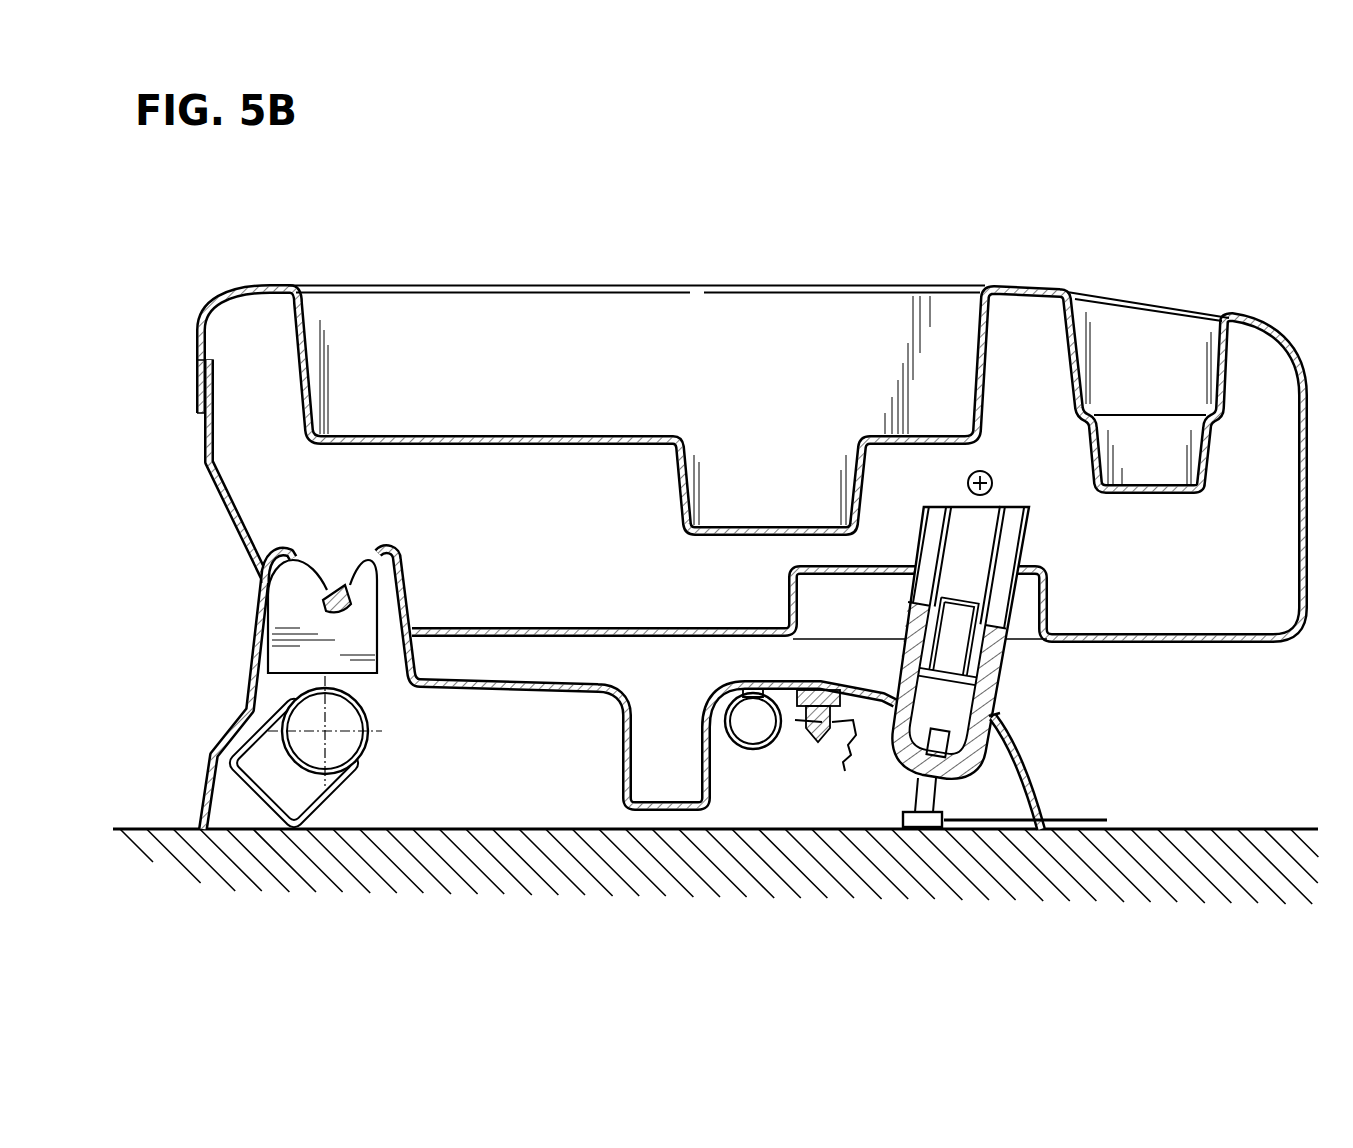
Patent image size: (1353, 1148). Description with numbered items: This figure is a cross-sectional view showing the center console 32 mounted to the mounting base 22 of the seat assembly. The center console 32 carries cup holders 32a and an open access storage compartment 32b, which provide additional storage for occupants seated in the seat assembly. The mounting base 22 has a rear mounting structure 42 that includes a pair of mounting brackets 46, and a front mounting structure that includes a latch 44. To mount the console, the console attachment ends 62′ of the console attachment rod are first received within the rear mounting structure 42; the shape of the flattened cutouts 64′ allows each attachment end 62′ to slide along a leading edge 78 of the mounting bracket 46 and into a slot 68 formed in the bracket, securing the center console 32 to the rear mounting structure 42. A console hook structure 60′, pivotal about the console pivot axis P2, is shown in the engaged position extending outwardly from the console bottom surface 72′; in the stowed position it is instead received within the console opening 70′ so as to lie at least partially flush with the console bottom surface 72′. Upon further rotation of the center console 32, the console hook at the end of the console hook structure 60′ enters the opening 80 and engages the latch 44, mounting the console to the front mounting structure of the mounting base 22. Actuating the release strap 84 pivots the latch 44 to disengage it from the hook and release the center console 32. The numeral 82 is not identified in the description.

The center console 32 is at (728, 262).
The cup holders 32a is at (1165, 345).
The open access storage compartment 32b is at (425, 322).
The console pivot axis P2 is at (991, 472).
The rear mounting structure 42 is at (226, 582).
The mounting bracket 46 is at (288, 612).
The slot 68 is at (340, 527).
The leading edge 78 is at (324, 590).
The flattened cutout 64′ is at (328, 590).
The console attachment end 62′ is at (345, 607).
The console opening 70′ is at (636, 637).
The console bottom surface 72′ is at (830, 629).
The opening 80 is at (887, 697).
The latch 44 is at (1030, 678).
The console hook structure 60′ is at (1038, 703).
The mounting base 22 is at (1023, 757).
The foot 82 is at (903, 826).
The release strap 84 is at (1088, 818).